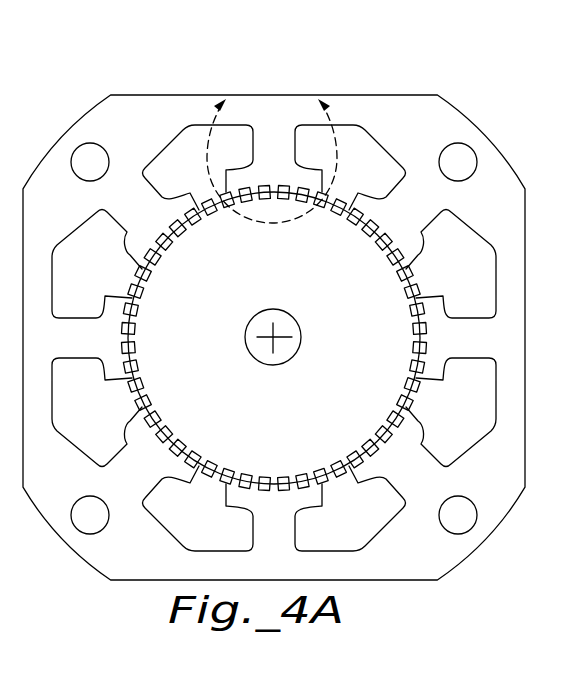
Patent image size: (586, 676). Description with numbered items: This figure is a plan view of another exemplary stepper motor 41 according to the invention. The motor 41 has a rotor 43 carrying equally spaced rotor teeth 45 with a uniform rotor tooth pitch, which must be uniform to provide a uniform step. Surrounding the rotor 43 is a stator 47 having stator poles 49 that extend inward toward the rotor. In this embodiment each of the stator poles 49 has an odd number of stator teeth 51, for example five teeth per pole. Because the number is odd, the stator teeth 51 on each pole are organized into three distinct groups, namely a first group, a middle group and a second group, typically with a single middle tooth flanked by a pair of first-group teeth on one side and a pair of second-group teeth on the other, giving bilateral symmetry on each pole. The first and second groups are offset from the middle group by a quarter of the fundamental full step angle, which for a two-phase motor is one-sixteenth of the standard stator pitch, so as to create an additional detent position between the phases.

The stepper motor 41 is at (410, 46).
The rotor 43 is at (206, 338).
The rotor teeth 45 is at (378, 427).
The stator 47 is at (136, 96).
The stator poles 49 is at (67, 357).
The stator teeth 51 is at (376, 219).